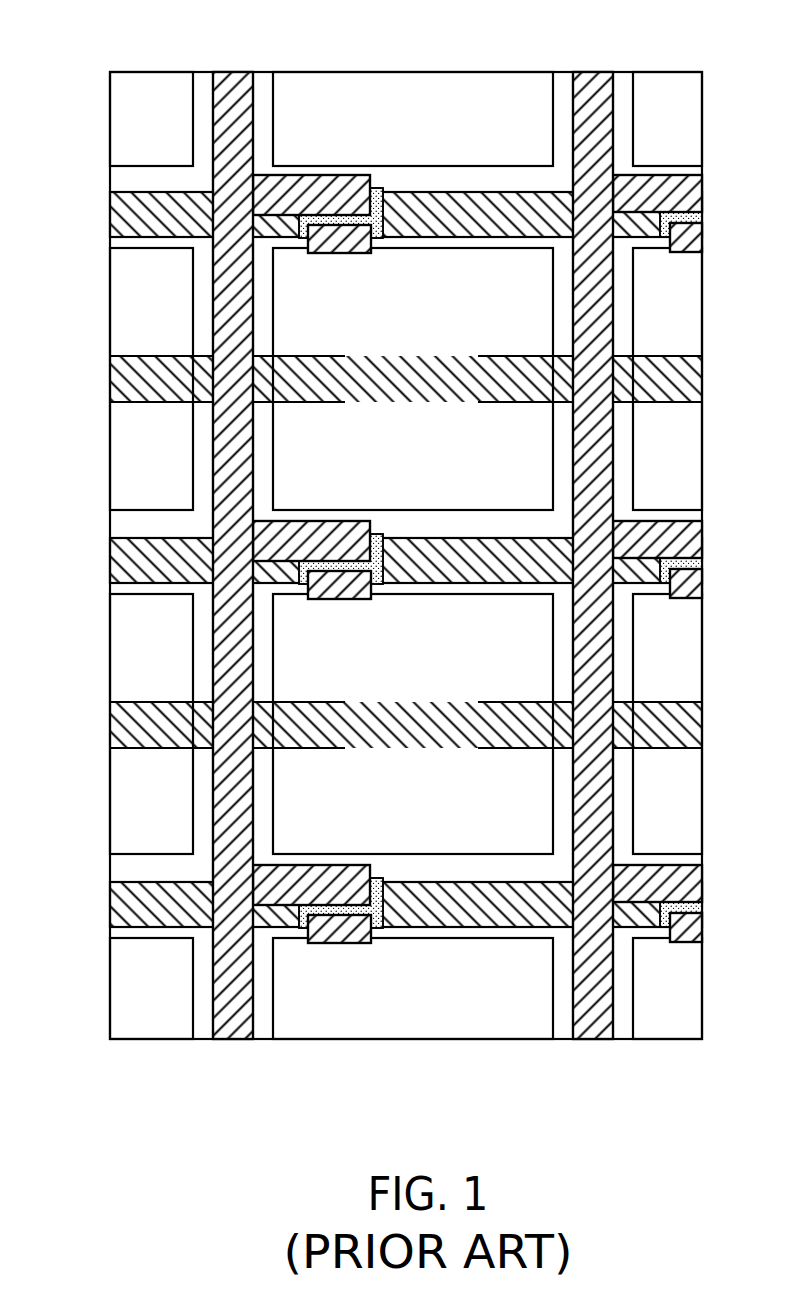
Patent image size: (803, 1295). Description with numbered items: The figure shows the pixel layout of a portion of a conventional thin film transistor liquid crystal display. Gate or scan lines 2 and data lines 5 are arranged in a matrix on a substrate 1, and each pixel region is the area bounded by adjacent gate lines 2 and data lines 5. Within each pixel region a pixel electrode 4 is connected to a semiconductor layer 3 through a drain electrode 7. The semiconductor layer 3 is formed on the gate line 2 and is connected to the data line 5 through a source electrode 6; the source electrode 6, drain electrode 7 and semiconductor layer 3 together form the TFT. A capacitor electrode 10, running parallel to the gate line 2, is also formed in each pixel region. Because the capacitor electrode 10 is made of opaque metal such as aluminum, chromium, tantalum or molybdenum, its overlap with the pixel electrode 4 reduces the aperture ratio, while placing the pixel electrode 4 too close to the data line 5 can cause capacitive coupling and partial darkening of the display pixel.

The substrate 1 is at (680, 72).
The gate line 2 is at (110, 213).
The semiconductor layer 3 is at (385, 204).
The pixel electrode 4 is at (447, 327).
The data line 5 is at (237, 78).
The source electrode 6 is at (297, 182).
The drain electrode 7 is at (323, 252).
The capacitor electrode 10 is at (110, 381).